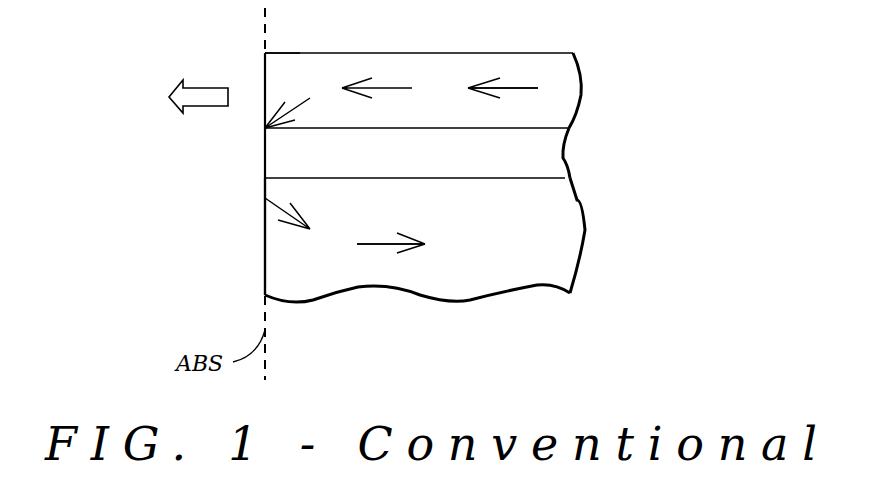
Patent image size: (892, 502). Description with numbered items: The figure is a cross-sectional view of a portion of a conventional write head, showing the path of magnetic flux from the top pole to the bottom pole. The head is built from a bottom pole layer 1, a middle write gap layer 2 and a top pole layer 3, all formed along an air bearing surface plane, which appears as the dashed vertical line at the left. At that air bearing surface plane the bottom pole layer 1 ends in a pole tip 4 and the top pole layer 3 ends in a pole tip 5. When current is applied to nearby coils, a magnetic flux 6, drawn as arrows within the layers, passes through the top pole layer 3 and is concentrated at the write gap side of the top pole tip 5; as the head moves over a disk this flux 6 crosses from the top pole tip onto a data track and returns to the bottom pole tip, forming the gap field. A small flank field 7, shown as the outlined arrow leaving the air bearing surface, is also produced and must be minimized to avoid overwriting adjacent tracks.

The bottom pole layer 1 is at (558, 231).
The middle write gap layer 2 is at (557, 151).
The top pole layer 3 is at (567, 88).
The pole tip 4 is at (265, 244).
The pole tip 5 is at (265, 70).
The magnetic flux 6 is at (518, 88).
The flank field 7 is at (183, 82).